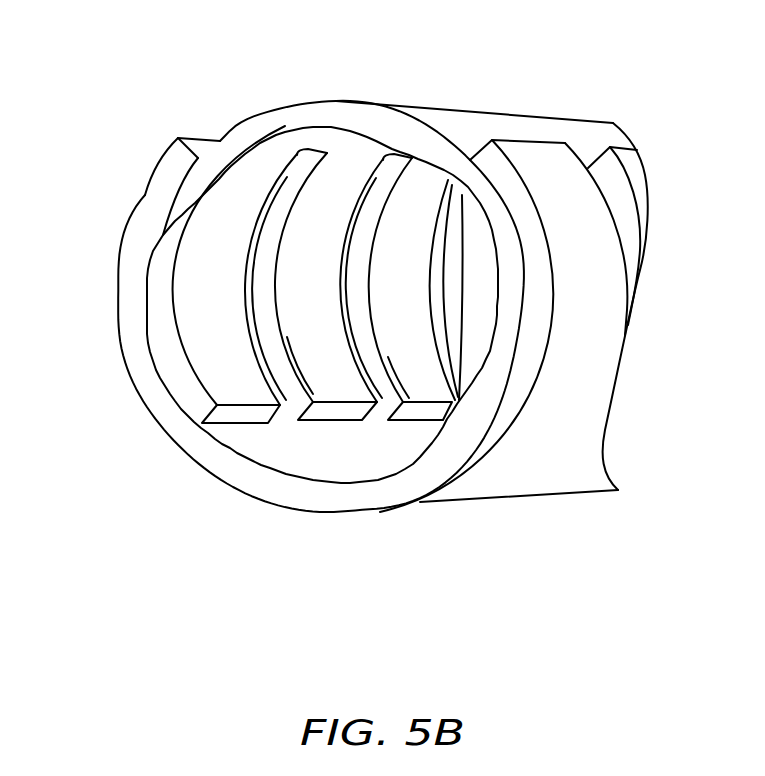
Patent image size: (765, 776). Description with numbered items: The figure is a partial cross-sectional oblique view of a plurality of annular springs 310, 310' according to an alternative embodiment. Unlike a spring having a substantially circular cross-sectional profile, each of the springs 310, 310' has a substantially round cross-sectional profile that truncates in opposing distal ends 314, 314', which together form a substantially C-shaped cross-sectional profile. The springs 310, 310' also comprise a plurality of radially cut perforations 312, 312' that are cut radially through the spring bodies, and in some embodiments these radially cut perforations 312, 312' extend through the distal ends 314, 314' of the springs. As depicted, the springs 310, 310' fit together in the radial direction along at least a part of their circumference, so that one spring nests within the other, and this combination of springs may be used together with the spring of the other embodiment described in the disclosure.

The annular spring 310 is at (493, 270).
The annular spring 310' is at (275, 306).
The radially cut perforation 312 is at (228, 277).
The radially cut perforation 312' is at (654, 236).
The distal end 314 is at (333, 485).
The distal end 314' is at (371, 111).